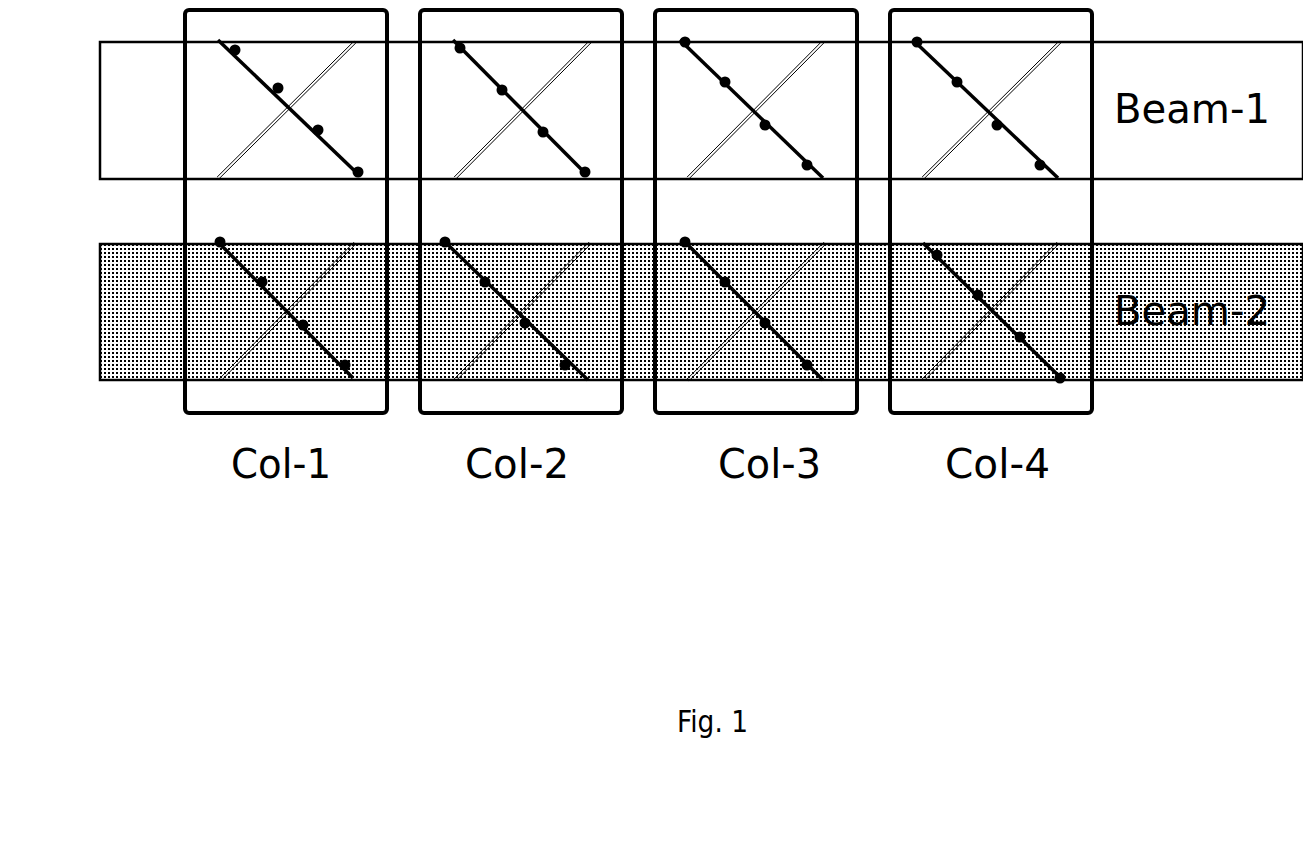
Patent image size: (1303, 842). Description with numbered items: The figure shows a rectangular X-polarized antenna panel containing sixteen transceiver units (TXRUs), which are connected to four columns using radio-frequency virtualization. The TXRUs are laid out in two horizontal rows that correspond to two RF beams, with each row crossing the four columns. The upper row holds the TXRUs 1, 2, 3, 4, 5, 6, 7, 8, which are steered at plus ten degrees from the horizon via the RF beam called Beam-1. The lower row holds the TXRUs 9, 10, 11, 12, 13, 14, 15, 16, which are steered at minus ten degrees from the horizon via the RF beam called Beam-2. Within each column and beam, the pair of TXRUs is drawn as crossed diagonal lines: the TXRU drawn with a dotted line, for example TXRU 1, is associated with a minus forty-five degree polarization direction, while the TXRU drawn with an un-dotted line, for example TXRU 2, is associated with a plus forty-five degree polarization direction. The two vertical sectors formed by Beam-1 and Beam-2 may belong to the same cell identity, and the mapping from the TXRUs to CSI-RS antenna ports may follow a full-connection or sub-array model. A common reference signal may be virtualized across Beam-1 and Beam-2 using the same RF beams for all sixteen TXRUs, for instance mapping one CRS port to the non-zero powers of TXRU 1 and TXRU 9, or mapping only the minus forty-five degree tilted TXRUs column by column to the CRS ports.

The TXRU 1 is at (282, 109).
The TXRU 2 is at (298, 110).
The TXRU 3 is at (511, 109).
The TXRU 4 is at (534, 110).
The TXRU 5 is at (745, 108).
The TXRU 6 is at (768, 110).
The TXRU 7 is at (982, 108).
The TXRU 8 is at (1003, 110).
The TXRU 9 is at (279, 308).
The TXRU 10 is at (301, 311).
The TXRU 11 is at (509, 309).
The TXRU 12 is at (536, 311).
The TXRU 13 is at (744, 309).
The TXRU 14 is at (770, 311).
The TXRU 15 is at (982, 313).
The TXRU 16 is at (1005, 311).